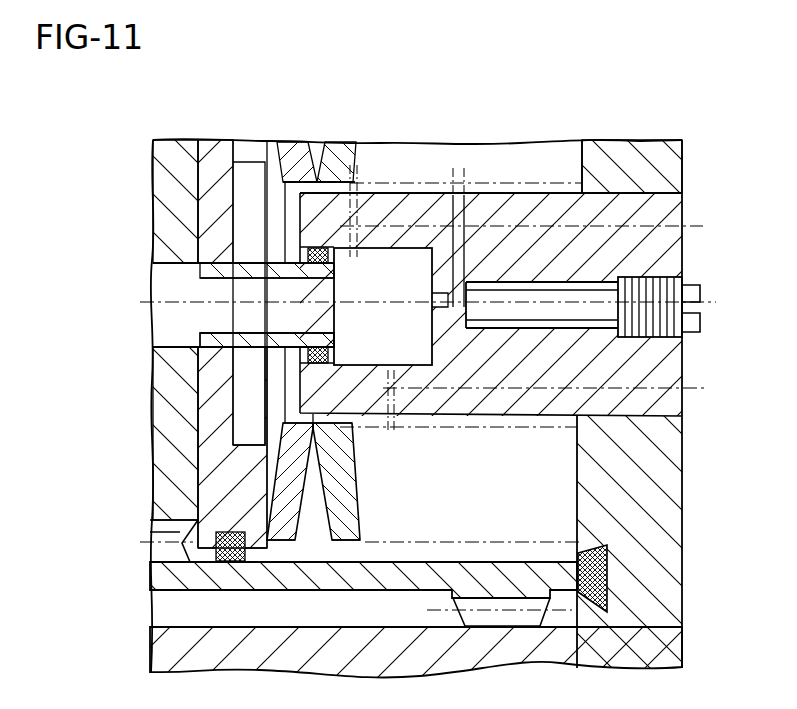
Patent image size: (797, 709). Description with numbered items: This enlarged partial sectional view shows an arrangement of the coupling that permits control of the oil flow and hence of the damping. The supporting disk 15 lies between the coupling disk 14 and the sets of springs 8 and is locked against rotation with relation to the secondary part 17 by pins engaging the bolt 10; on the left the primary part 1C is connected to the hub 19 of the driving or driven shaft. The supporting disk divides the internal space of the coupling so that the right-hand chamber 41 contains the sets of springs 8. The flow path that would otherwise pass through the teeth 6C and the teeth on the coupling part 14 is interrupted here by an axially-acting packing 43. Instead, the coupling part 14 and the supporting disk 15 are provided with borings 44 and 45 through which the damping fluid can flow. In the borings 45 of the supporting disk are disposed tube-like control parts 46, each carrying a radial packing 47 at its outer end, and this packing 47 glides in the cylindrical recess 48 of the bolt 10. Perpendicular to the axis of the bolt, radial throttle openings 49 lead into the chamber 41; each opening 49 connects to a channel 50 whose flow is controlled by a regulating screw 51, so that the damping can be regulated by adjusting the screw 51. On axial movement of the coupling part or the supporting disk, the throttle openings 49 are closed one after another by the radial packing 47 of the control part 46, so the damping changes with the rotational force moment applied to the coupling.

The coupling disk 14 is at (175, 160).
The supporting disk 15 is at (243, 158).
The bolt 10 is at (507, 238).
The secondary part 17 is at (645, 455).
The borings 44 is at (217, 258).
The borings 45 is at (170, 285).
The tube-like control part 46 is at (205, 333).
The radial packing 47 is at (300, 365).
The cylindrical recess 48 is at (392, 338).
The radial throttle openings 49 is at (352, 192).
The channel 50 is at (438, 298).
The regulating screw 51 is at (668, 338).
The set of springs 8 is at (290, 483).
The right-hand chamber 41 is at (500, 521).
The intermediate plate 1C is at (180, 570).
The hub 19 is at (170, 648).
The teeth 6C is at (512, 606).
The axially-acting packing 43 is at (605, 577).